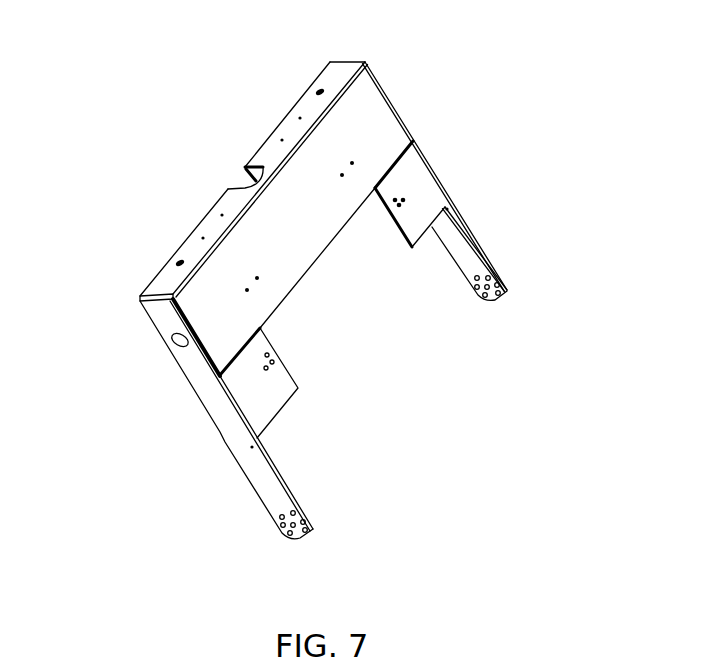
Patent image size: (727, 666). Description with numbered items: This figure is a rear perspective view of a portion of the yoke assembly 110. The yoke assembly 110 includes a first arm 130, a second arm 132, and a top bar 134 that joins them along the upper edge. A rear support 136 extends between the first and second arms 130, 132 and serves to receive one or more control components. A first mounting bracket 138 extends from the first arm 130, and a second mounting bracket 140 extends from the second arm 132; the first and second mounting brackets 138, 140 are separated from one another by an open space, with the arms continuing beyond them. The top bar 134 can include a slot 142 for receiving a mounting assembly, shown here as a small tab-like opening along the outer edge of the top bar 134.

The yoke assembly 110 is at (124, 200).
The first arm 130 is at (273, 498).
The second arm 132 is at (477, 260).
The top bar 134 is at (303, 102).
The rear support 136 is at (372, 112).
The first mounting bracket 138 is at (260, 405).
The second mounting bracket 140 is at (432, 190).
The slot 142 is at (248, 165).